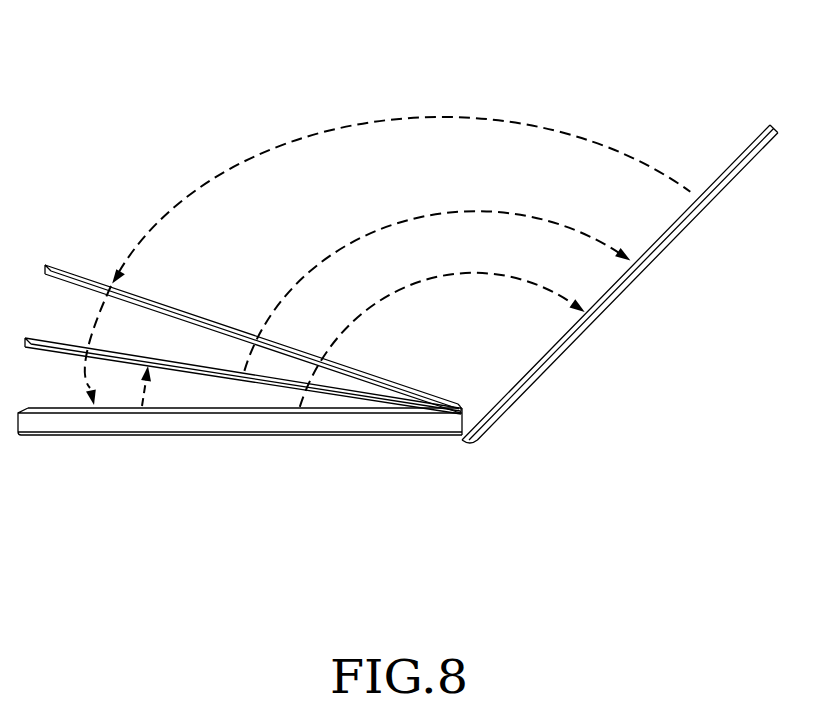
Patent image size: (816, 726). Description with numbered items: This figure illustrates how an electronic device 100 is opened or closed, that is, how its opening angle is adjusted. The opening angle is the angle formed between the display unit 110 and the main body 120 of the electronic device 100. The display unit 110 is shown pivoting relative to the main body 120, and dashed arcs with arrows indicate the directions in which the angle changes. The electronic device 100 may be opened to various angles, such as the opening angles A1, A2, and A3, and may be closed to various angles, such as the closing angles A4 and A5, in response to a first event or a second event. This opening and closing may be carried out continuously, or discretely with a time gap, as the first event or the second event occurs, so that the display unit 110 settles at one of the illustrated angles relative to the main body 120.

The electronic device 100 is at (205, 82).
The display unit 110 is at (613, 300).
The main body 120 is at (266, 436).
The opening angle A1 is at (133, 386).
The opening angle A2 is at (442, 331).
The opening angle A3 is at (437, 284).
The closing angle A4 is at (401, 194).
The closing angle A5 is at (88, 345).